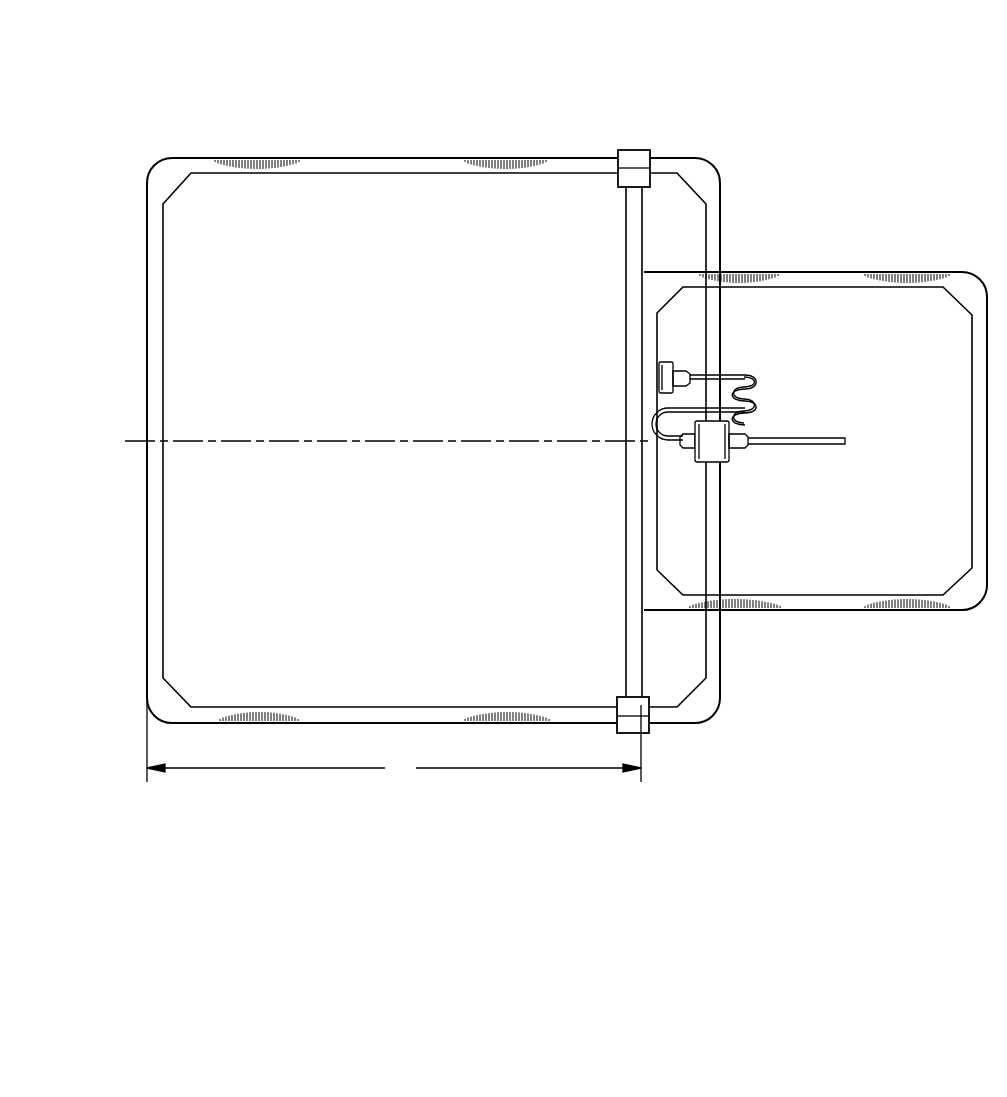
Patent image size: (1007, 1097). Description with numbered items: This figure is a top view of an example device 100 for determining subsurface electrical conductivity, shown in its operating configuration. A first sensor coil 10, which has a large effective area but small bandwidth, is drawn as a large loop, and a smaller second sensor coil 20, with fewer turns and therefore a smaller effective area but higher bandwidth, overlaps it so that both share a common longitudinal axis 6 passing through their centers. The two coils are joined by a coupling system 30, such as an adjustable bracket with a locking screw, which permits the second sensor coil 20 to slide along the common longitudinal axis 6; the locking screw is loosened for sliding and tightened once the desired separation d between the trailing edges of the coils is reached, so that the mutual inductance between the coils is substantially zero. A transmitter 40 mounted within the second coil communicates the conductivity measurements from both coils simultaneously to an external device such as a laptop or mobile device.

The device 100 is at (770, 161).
The first sensor coil 10 is at (395, 158).
The second sensor coil 20 is at (863, 272).
The coupling system 30 is at (633, 150).
The transmitter 40 is at (808, 437).
The common longitudinal axis 6 is at (373, 440).